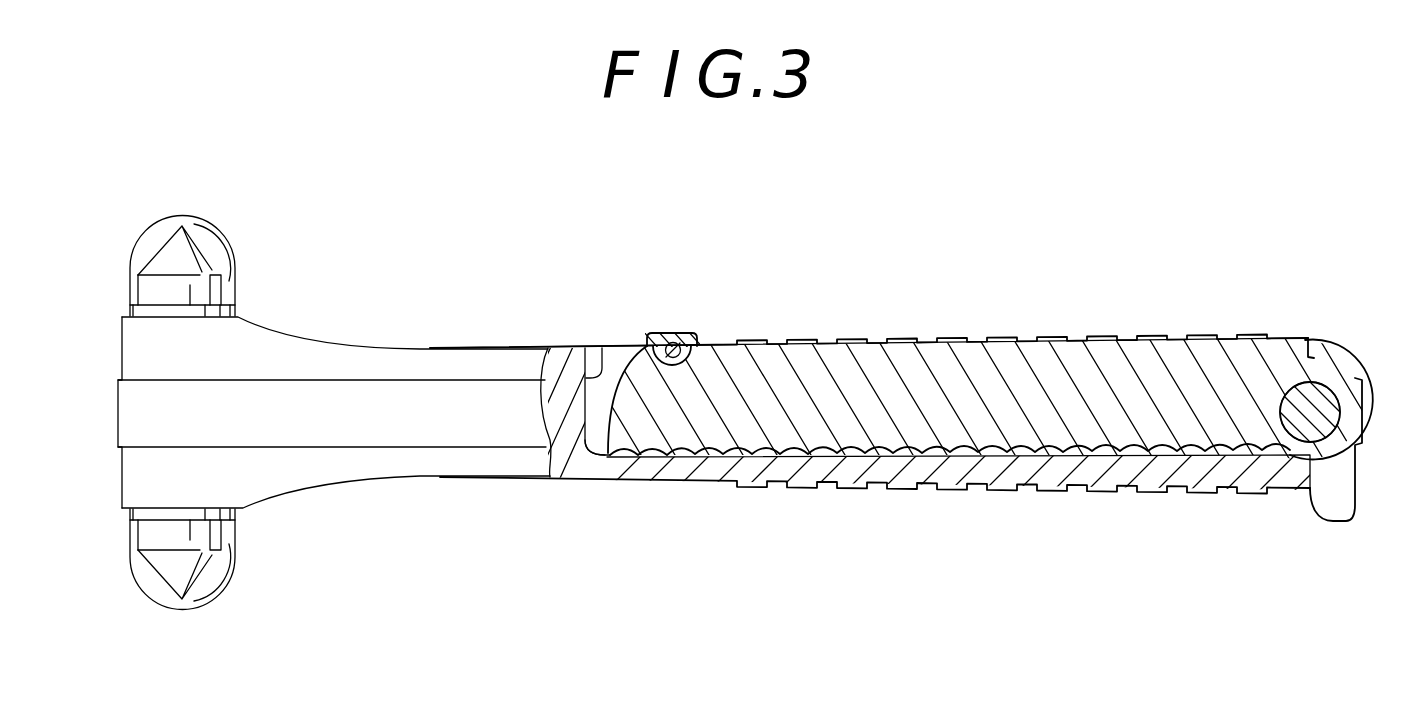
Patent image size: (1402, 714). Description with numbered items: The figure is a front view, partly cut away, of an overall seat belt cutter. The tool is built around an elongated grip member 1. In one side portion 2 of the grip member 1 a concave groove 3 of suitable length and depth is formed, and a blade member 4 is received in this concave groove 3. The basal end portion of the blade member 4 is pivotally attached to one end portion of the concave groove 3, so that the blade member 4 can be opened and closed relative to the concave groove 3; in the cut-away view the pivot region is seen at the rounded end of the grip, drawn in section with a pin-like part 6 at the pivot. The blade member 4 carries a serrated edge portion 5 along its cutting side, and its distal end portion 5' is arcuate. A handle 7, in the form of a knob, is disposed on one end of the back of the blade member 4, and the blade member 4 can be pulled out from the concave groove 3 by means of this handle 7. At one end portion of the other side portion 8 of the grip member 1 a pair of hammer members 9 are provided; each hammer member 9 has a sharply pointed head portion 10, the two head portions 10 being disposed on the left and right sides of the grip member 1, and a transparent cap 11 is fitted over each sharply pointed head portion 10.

The grip member 1 is at (706, 488).
The side portion 2 is at (906, 483).
The concave groove 3 is at (603, 348).
The blade member 4 is at (803, 348).
The serrated edge portion 5 is at (950, 515).
The distal end portion 5' is at (585, 506).
The pin 6 is at (1322, 405).
The handle 7 is at (677, 333).
The other side portion 8 is at (435, 470).
The hammer member 9 is at (165, 287).
The sharply pointed head portion 10 is at (148, 268).
The transparent cap 11 is at (222, 237).